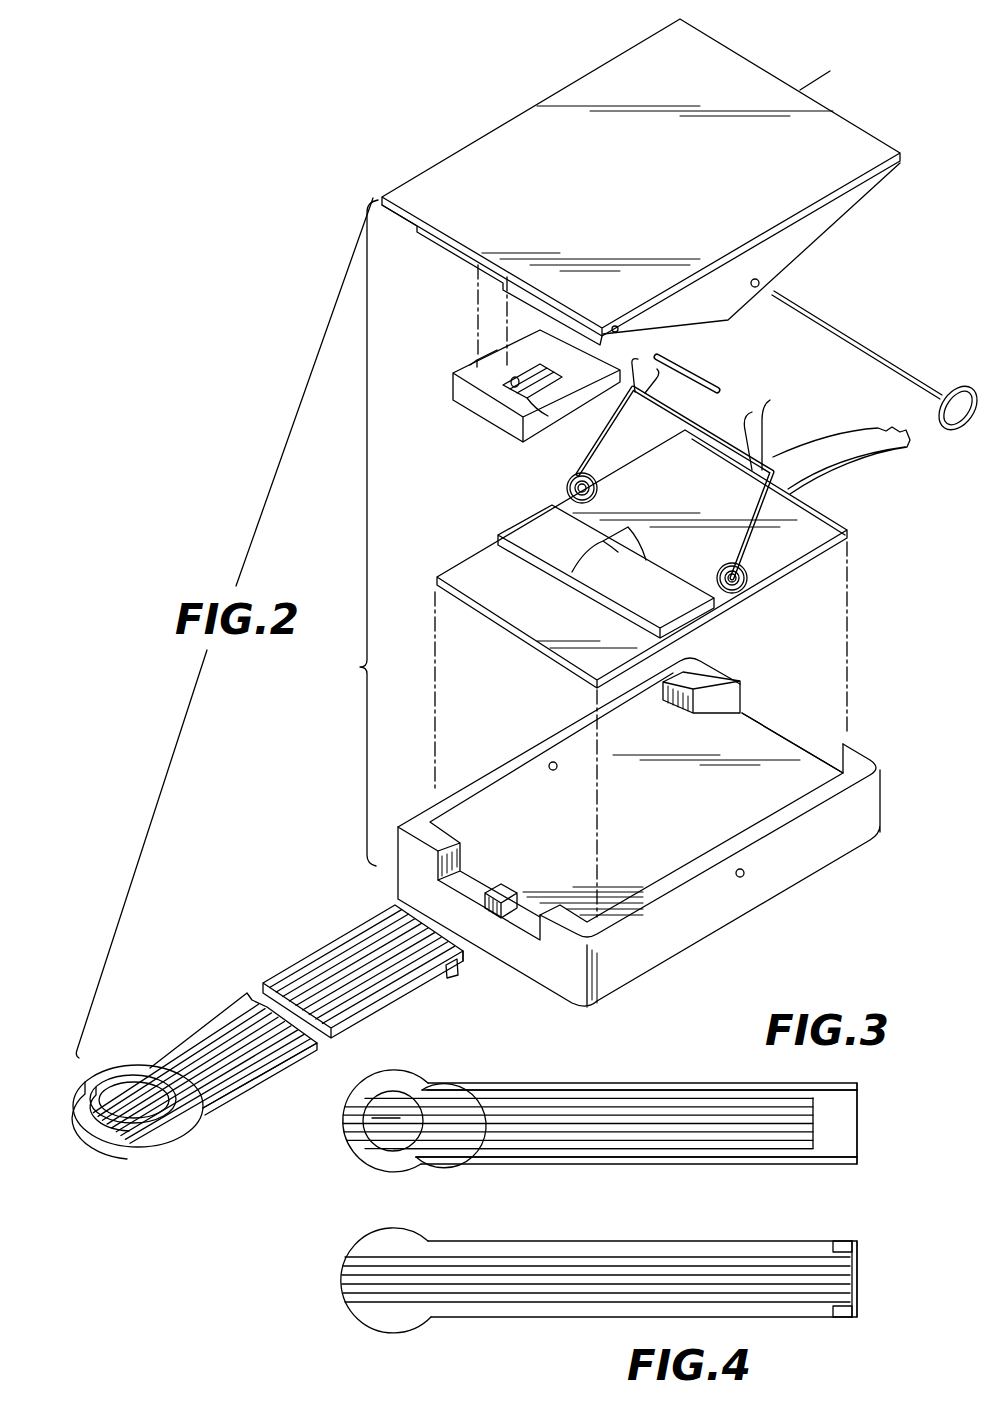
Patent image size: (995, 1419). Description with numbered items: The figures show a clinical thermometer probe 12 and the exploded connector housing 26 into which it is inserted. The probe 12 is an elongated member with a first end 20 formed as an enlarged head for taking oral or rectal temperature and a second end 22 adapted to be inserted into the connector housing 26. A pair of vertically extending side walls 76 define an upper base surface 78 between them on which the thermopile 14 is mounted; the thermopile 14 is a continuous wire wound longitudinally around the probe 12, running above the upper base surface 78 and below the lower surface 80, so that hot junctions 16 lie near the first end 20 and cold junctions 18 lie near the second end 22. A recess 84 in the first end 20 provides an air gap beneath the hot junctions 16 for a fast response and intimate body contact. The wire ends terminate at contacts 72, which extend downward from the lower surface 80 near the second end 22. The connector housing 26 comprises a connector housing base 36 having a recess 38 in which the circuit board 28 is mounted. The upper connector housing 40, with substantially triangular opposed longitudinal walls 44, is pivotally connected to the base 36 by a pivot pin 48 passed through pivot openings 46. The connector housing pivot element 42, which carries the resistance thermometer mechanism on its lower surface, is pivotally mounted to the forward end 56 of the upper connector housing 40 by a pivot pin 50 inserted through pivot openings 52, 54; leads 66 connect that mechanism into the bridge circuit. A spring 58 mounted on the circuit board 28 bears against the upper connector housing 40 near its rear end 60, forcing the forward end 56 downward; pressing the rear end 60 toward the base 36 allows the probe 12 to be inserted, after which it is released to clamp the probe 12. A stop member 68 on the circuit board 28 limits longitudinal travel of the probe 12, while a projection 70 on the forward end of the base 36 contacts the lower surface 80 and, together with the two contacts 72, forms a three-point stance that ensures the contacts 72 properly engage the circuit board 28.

In FIG. 2, the probe 12 is at (229, 990).
In FIG. 3, the probe 12 is at (727, 1163).
In FIG. 2, the thermopile 14 is at (188, 1058).
In FIG. 3, the thermopile 14 is at (602, 1117).
In FIG. 2, the hot junctions 16 is at (124, 1090).
In FIG. 3, the hot junctions 16 is at (392, 1123).
In FIG. 2, the cold junctions 18 is at (383, 937).
In FIG. 3, the cold junctions 18 is at (817, 1130).
In FIG. 2, the first end 20 is at (83, 1130).
In FIG. 3, the first end 20 is at (343, 1110).
In FIG. 4, the first end 20 is at (342, 1280).
In FIG. 2, the second end 22 is at (442, 930).
In FIG. 3, the second end 22 is at (860, 1123).
In FIG. 4, the second end 22 is at (860, 1273).
In FIG. 2, the connector housing 26 is at (339, 533).
In FIG. 2, the circuit board 28 is at (803, 532).
In FIG. 2, the connector housing base 36 is at (697, 927).
In FIG. 2, the recess 38 is at (777, 803).
In FIG. 2, the upper connector housing 40 is at (657, 178).
In FIG. 2, the connector housing pivot element 42 is at (489, 407).
In FIG. 2, the longitudinal walls 44 is at (813, 223).
In FIG. 2, the pivot openings 46 is at (765, 908).
In FIG. 2, the pivot pin 48 is at (823, 320).
In FIG. 2, the pivot pin 50 is at (693, 375).
In FIG. 2, the pivot opening 52 is at (620, 330).
In FIG. 2, the pivot opening 54 is at (513, 389).
In FIG. 2, the forward end 56 is at (453, 250).
In FIG. 2, the spring 58 is at (710, 430).
In FIG. 2, the rear end 60 is at (834, 68).
In FIG. 2, the leads 66 is at (765, 428).
In FIG. 2, the stop member 68 is at (580, 583).
In FIG. 2, the projection 70 is at (503, 888).
In FIG. 2, the contacts 72 is at (447, 980).
In FIG. 4, the contacts 72 is at (853, 1317).
In FIG. 3, the side walls 76 is at (775, 1158).
In FIG. 2, the upper base surface 78 is at (230, 1057).
In FIG. 3, the upper base surface 78 is at (468, 1137).
In FIG. 4, the lower surface 80 is at (610, 1245).
In FIG. 3, the recess 84 is at (373, 1118).